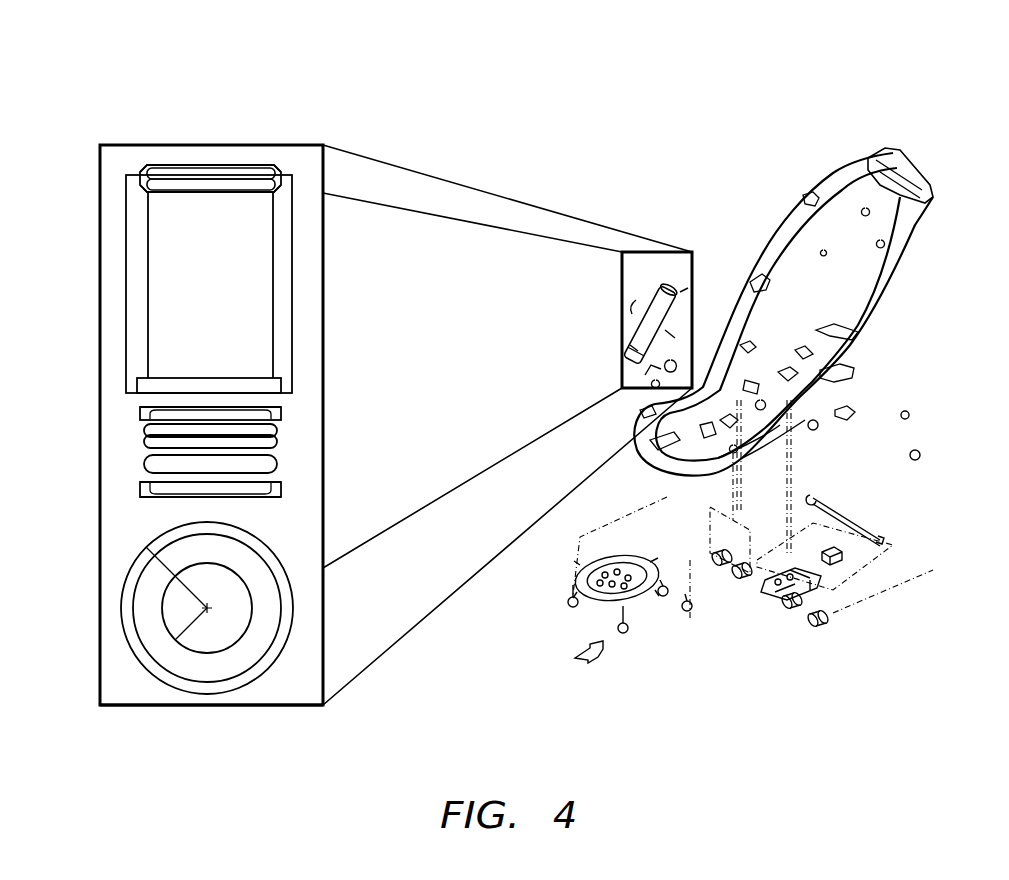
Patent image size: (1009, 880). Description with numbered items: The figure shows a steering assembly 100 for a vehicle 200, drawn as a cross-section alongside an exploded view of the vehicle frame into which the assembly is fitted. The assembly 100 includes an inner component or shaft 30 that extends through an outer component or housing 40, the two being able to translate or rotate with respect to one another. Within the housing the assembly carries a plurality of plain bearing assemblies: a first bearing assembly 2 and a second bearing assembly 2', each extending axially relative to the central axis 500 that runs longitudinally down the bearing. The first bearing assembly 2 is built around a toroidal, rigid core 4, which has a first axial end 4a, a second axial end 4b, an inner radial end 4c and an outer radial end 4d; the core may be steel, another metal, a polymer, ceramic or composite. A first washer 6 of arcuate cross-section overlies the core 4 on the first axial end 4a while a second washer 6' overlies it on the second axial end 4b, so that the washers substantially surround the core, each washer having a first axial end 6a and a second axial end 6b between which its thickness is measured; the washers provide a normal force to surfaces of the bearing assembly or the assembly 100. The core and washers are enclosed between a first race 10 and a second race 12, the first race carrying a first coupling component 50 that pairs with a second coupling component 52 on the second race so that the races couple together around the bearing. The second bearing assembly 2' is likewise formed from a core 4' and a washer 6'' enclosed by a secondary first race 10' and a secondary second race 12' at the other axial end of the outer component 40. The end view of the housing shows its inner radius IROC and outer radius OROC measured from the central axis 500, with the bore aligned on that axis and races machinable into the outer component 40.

The second bearing assembly 2' is at (171, 419).
The secondary first race 10' is at (190, 133).
The secondary second race 12' is at (164, 204).
The washer 6'' is at (257, 169).
The core 4' is at (252, 157).
The shaft 30 is at (275, 230).
The outer component 40 is at (293, 278).
The assembly 100 is at (437, 122).
The vehicle 200 is at (908, 85).
The first race 10 is at (164, 382).
The first axial end of washer 6a is at (146, 432).
The second axial end of washer 6b is at (146, 440).
The inner radial end of core 4c is at (146, 446).
The core 4 is at (215, 554).
The second race 12 is at (169, 505).
The first coupling component 50 is at (282, 407).
The outer radius of outer component OROC is at (147, 560).
The inner radius of outer component IROC is at (195, 625).
The central axis 500 is at (207, 608).
The first washer 6 is at (248, 536).
The second washer 6' is at (255, 432).
The first axial end of core 4a is at (277, 456).
The second axial end of core 4b is at (277, 464).
The outer radial end of core 4d is at (281, 484).
The second coupling component 52 is at (281, 497).
The bearing assembly 2 is at (273, 544).